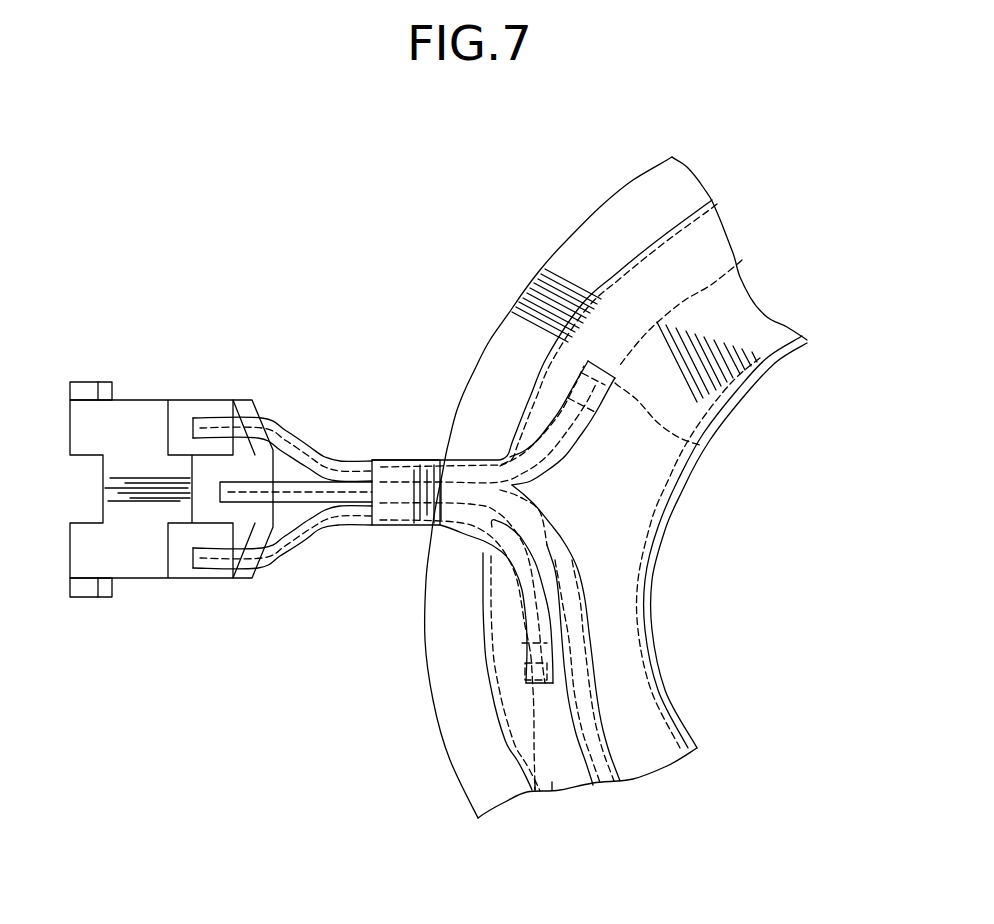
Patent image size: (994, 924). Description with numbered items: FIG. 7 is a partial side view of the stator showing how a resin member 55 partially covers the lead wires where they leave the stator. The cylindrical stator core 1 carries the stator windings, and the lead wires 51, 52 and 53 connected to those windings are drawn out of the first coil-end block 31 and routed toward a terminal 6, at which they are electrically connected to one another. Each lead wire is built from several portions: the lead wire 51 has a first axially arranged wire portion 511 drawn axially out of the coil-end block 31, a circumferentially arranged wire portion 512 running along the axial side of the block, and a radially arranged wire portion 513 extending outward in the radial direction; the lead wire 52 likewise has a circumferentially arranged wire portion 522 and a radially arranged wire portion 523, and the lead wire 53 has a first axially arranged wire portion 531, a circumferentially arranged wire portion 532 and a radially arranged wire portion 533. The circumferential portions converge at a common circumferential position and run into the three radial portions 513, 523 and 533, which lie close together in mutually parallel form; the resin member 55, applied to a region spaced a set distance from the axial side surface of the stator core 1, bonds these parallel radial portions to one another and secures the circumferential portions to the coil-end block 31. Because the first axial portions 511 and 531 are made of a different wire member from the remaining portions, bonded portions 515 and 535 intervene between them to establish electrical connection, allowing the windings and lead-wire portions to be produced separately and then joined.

The stator core 1 is at (617, 207).
The first coil-end block 31 is at (800, 354).
The lead wire 51 is at (537, 427).
The first axially arranged wire portion 511 is at (745, 259).
The circumferentially arranged wire portion 512 is at (605, 408).
The radially arranged wire portion 513 is at (385, 478).
The bonded portion 515 is at (608, 398).
The lead wire 52 is at (525, 585).
The circumferentially arranged wire portion 522 is at (582, 677).
The radially arranged wire portion 523 is at (360, 462).
The lead wire 53 is at (520, 557).
The first axially arranged wire portion 531 is at (536, 793).
The circumferentially arranged wire portion 532 is at (533, 627).
The radially arranged wire portion 533 is at (385, 513).
The bonded portion 535 is at (505, 673).
The resin member 55 is at (610, 275).
The terminal 6 is at (138, 418).